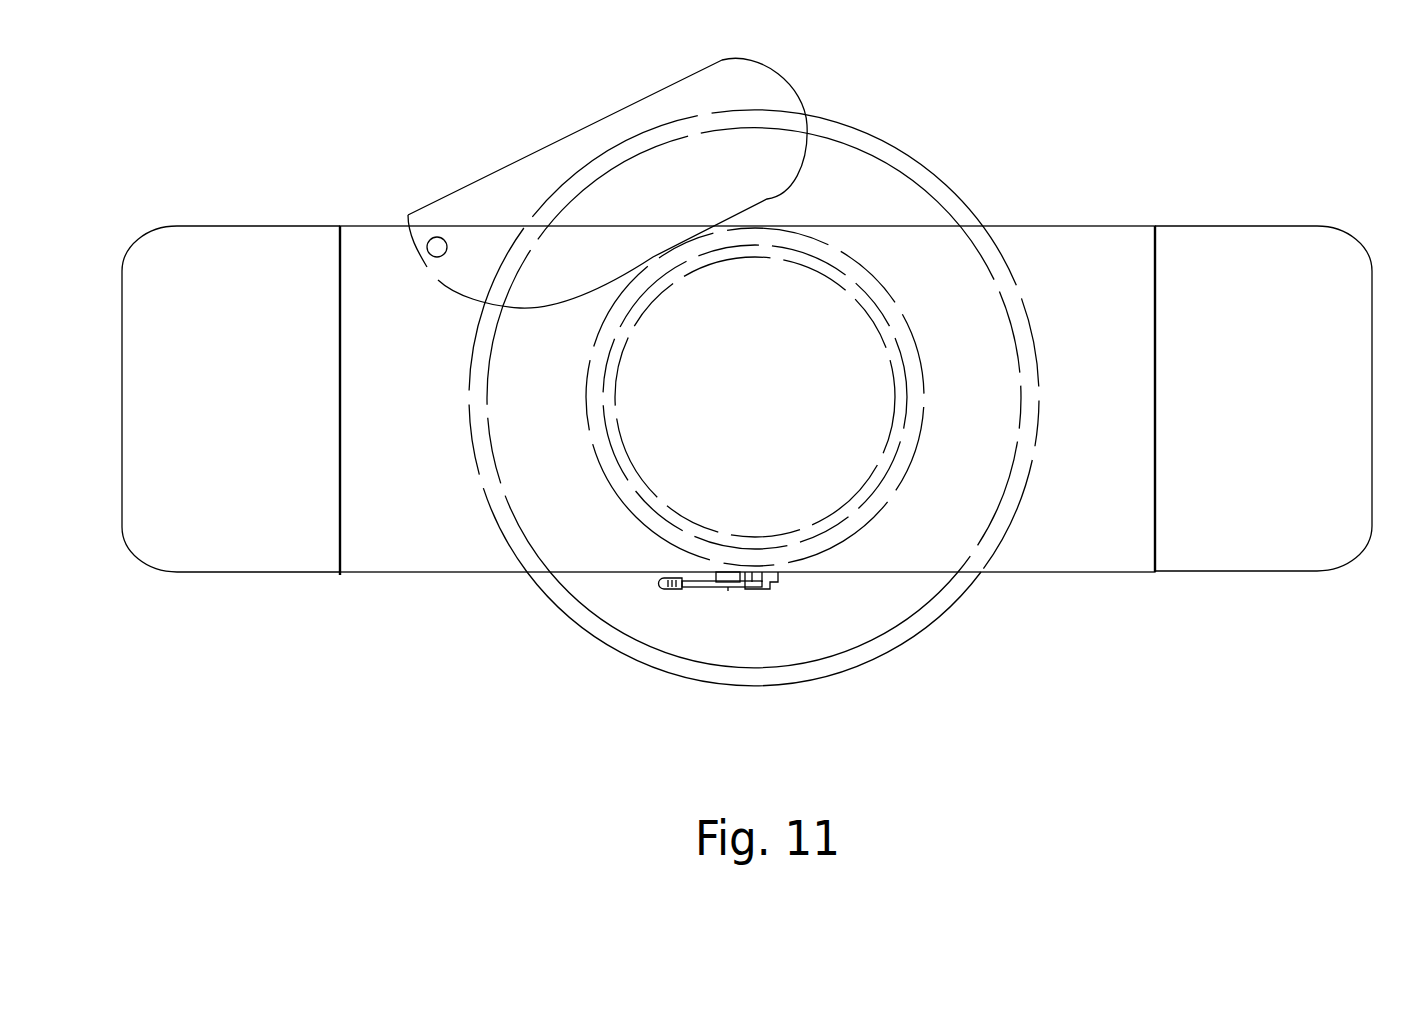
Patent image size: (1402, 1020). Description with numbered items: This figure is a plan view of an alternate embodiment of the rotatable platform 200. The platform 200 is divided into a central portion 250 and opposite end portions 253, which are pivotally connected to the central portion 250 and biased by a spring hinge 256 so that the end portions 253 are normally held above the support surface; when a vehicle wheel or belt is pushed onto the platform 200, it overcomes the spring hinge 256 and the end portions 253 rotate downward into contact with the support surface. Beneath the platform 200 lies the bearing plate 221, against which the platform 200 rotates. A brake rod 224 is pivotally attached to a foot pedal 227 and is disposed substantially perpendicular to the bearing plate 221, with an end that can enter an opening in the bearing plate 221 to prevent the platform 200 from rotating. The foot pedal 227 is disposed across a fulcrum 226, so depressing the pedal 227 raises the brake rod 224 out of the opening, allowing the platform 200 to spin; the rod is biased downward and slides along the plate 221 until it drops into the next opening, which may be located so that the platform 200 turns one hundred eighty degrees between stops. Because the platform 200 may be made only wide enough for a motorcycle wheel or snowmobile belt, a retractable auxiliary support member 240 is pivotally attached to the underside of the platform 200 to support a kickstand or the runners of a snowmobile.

The platform 200 is at (388, 638).
The bearing plate 221 is at (920, 542).
The brake rod 224 is at (762, 588).
The fulcrum 226 is at (723, 587).
The foot pedal 227 is at (668, 585).
The retractable auxiliary support member 240 is at (527, 172).
The central portion 250 is at (1088, 322).
The end portion 253 is at (235, 270).
The spring hinge 256 is at (339, 226).